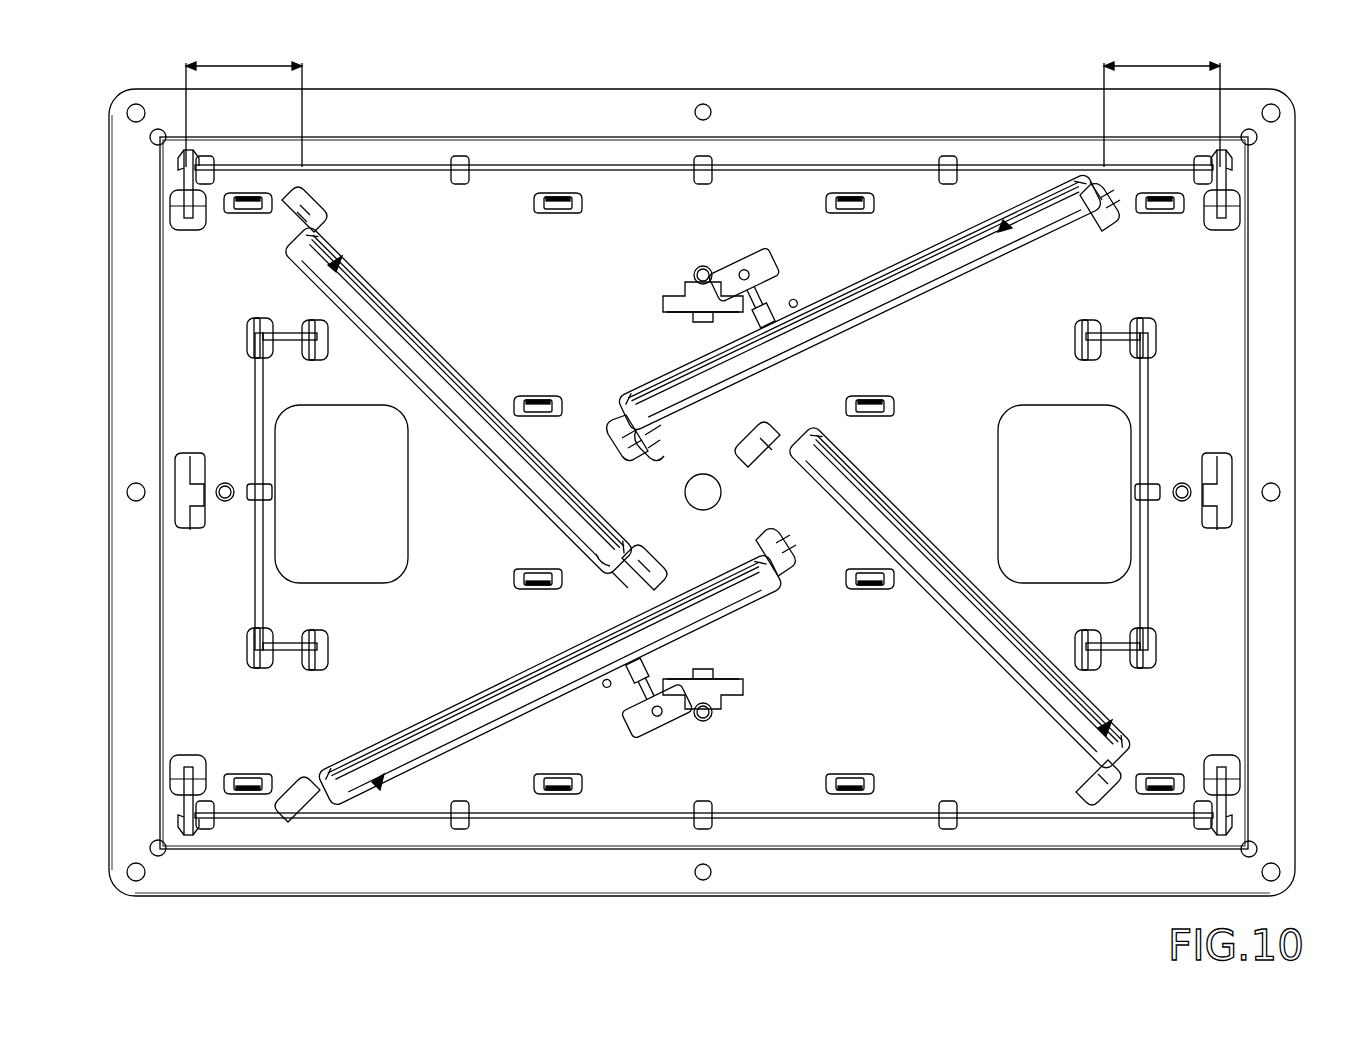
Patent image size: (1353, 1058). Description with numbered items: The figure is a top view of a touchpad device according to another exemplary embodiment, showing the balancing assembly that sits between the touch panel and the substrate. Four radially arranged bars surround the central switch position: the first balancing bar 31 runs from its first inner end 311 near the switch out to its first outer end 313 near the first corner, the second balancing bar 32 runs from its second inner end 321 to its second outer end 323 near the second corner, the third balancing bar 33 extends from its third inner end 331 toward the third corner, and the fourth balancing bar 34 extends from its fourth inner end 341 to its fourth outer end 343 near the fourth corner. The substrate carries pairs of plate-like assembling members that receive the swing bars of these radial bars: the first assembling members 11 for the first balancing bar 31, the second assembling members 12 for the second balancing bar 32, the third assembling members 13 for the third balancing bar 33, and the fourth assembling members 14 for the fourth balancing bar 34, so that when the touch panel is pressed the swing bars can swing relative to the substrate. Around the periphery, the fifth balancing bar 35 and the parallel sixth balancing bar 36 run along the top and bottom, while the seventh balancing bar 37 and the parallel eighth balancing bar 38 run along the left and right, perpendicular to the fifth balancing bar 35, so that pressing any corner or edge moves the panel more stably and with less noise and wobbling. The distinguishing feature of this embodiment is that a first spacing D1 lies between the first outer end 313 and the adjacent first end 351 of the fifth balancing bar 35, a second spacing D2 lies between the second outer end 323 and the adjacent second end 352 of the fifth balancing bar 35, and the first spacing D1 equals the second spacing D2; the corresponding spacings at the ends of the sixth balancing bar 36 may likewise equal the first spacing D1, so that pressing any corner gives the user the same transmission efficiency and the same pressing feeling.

The first assembling member 11 is at (303, 205).
The second assembling member 12 is at (1112, 218).
The third assembling member 13 is at (1095, 795).
The fourth assembling member 14 is at (298, 775).
The first balancing bar 31 is at (336, 266).
The first inner end 311 is at (630, 560).
The first outer end 313 is at (292, 210).
The second balancing bar 32 is at (1003, 222).
The second inner end 321 is at (615, 425).
The second outer end 323 is at (1082, 195).
The third balancing bar 33 is at (800, 438).
The third inner end 331 is at (1125, 780).
The fourth balancing bar 34 is at (375, 785).
The fourth inner end 341 is at (790, 560).
The fourth outer end 343 is at (295, 790).
The fifth balancing bar 35 is at (945, 163).
The first end 351 is at (178, 172).
The second end 352 is at (1232, 172).
The sixth balancing bar 36 is at (892, 820).
The seventh balancing bar 37 is at (258, 590).
The eighth balancing bar 38 is at (1148, 618).
The first spacing D1 is at (244, 103).
The second spacing D2 is at (1162, 103).